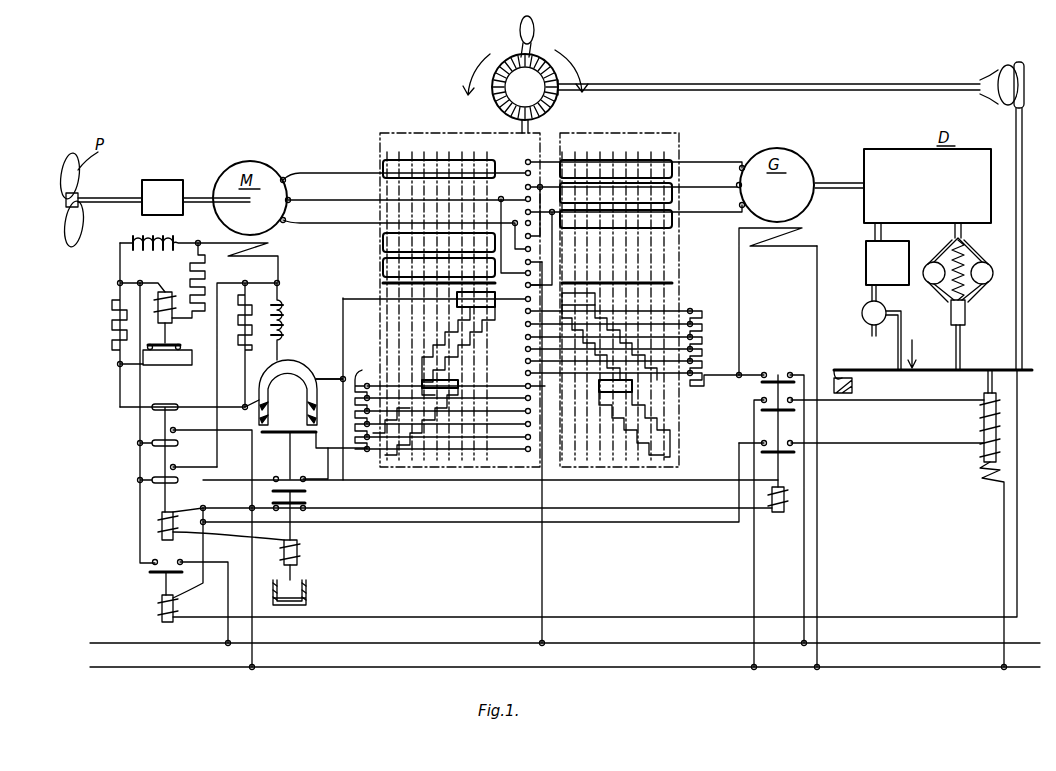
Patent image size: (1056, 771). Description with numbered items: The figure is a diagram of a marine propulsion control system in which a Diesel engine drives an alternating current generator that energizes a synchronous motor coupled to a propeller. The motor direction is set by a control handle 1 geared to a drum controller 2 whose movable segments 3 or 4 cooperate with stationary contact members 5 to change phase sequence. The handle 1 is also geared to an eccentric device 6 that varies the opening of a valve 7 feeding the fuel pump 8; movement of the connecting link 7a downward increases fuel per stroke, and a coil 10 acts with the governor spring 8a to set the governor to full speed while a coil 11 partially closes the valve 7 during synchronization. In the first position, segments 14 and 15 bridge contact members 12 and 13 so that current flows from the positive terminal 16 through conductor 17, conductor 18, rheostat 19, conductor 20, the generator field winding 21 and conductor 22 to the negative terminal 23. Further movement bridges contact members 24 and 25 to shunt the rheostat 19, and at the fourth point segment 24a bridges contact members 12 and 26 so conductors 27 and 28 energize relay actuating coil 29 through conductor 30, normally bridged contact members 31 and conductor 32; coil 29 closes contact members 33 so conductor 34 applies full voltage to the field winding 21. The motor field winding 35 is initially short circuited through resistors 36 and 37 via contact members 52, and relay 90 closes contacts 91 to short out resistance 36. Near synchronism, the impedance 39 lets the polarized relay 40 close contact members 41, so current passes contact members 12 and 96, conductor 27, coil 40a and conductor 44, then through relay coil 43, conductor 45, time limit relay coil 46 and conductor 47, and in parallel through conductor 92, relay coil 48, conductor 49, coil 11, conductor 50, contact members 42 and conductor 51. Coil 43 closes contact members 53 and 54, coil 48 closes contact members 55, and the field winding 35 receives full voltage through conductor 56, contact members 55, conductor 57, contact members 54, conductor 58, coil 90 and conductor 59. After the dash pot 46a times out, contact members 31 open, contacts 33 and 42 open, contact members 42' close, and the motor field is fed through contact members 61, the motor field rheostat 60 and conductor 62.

The control handle 1 is at (534, 22).
The controller 2 is at (658, 109).
The movable segments 3 is at (672, 222).
The movable segments 4 is at (385, 270).
The stationary contact members 5 is at (524, 155).
The eccentric device 6 is at (990, 55).
The valve 7 is at (863, 320).
The connecting link 7a is at (898, 350).
The fuel pump 8 is at (866, 263).
The governor spring 8a is at (975, 262).
The contact member 96 is at (525, 311).
The coil 10 is at (998, 450).
The coil 11 is at (996, 410).
The contact member 12 is at (533, 287).
The contact member 13 is at (533, 311).
The controller segment 14 is at (570, 287).
The controller segment 15 is at (578, 298).
The positive terminal 16 is at (592, 643).
The conductor 17 is at (544, 553).
The conductor 18 is at (672, 312).
The rheostat 19 is at (704, 342).
The conductor 20 is at (740, 333).
The generator field winding 21 is at (775, 246).
The conductor 22 is at (819, 473).
The negative terminal 23 is at (790, 669).
The contact member 24 is at (525, 324).
The contact segment 24a is at (595, 302).
The contact member 25 is at (525, 337).
The contact member 26 is at (525, 349).
The conductor 27 is at (343, 330).
The conductor 28 is at (413, 480).
The relay actuating coil 29 is at (784, 508).
The conductor 30 is at (603, 510).
The contact members 31 is at (306, 497).
The conductor 32 is at (252, 497).
The contact members 33 is at (778, 372).
The conductor 34 is at (804, 568).
The motor field winding 35 is at (270, 247).
The motor field resistance 36 is at (112, 330).
The resistor 37 is at (232, 338).
The impedance 39 is at (284, 328).
The polarized relay 40 is at (294, 392).
The coil 40a is at (312, 390).
The contact members 41 is at (295, 478).
The contact members 42 is at (757, 527).
The contact members 42' is at (754, 437).
The relay coil 43 is at (158, 536).
The conductor 44 is at (226, 480).
The conductor 45 is at (228, 540).
The time limit relay coil 46 is at (300, 545).
The dash pot 46a is at (308, 592).
The conductor 47 is at (252, 590).
The relay coil 48 is at (160, 610).
The conductor 49 is at (382, 617).
The conductor 50 is at (880, 400).
The conductor 51 is at (754, 545).
The contact members 52 is at (170, 408).
The contact members 53 is at (176, 431).
The contact members 54 is at (176, 469).
The contact members 55 is at (150, 565).
The conductor 56 is at (228, 592).
The conductor 57 is at (140, 500).
The conductor 58 is at (217, 380).
The conductor 59 is at (142, 387).
The motor field rheostat 60 is at (438, 407).
The contact member 61 is at (549, 387).
The conductor 62 is at (314, 455).
The relay 90 is at (172, 290).
The contacts 91 is at (177, 344).
The conductor 92 is at (205, 548).